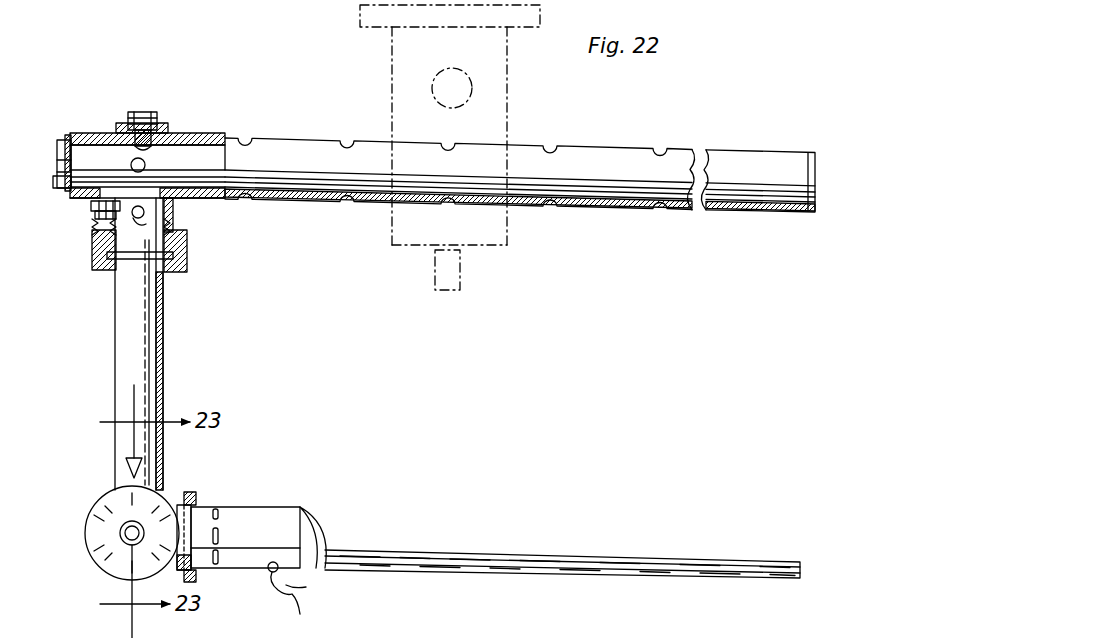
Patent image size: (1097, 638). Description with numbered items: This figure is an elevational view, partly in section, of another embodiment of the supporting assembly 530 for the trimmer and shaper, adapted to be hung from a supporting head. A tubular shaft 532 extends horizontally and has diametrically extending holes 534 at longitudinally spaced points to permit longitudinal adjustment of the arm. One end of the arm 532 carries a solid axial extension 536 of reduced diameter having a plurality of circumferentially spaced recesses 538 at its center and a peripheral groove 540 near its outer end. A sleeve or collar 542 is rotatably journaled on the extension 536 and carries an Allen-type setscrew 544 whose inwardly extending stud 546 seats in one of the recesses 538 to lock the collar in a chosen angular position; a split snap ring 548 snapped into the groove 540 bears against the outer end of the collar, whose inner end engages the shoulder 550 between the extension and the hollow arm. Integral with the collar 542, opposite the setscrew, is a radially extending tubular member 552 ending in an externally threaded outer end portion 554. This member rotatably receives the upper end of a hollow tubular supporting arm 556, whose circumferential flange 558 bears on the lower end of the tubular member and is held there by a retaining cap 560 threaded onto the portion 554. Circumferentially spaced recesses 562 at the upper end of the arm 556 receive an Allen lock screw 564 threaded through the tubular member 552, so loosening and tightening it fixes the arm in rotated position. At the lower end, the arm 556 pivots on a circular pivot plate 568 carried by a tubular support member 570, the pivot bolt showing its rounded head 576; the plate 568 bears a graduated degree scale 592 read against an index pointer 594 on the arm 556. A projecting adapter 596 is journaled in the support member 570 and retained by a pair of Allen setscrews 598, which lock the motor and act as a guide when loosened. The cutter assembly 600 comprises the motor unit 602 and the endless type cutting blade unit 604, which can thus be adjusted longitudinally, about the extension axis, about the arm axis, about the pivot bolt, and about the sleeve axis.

The supporting assembly 530 is at (252, 114).
The tubular shaft 532 is at (604, 186).
The diametrically extending holes 534 is at (562, 147).
The axial extension 536 is at (196, 142).
The circumferentially spaced recesses 538 is at (130, 170).
The peripheral groove 540 is at (68, 183).
The sleeve or collar 542 is at (98, 134).
The Allen-type setscrew 544 is at (140, 112).
The inwardly extending stud 546 is at (148, 146).
The split snap ring 548 is at (66, 137).
The shoulder 550 is at (232, 177).
The radially extending tubular member 552 is at (172, 212).
The externally threaded outer end portion 554 is at (95, 252).
The hollow tubular supporting arm 556 is at (115, 316).
The circumferential flange 558 is at (122, 260).
The retaining cap 560 is at (190, 275).
The circumferentially spaced recesses 562 is at (140, 220).
The Allen lock screw 564 is at (95, 212).
The circular pivot plate 568 is at (106, 570).
The tubular support member 570 is at (183, 502).
The rounded head 576 is at (128, 533).
The graduated degree scale 592 is at (95, 538).
The index pointer 594 is at (126, 467).
The projecting adapter 596 is at (216, 513).
The Allen setscrews 598 is at (196, 504).
The cutter assembly 600 is at (410, 546).
The motor unit 602 is at (289, 515).
The endless type cutting blade unit 604 is at (580, 557).